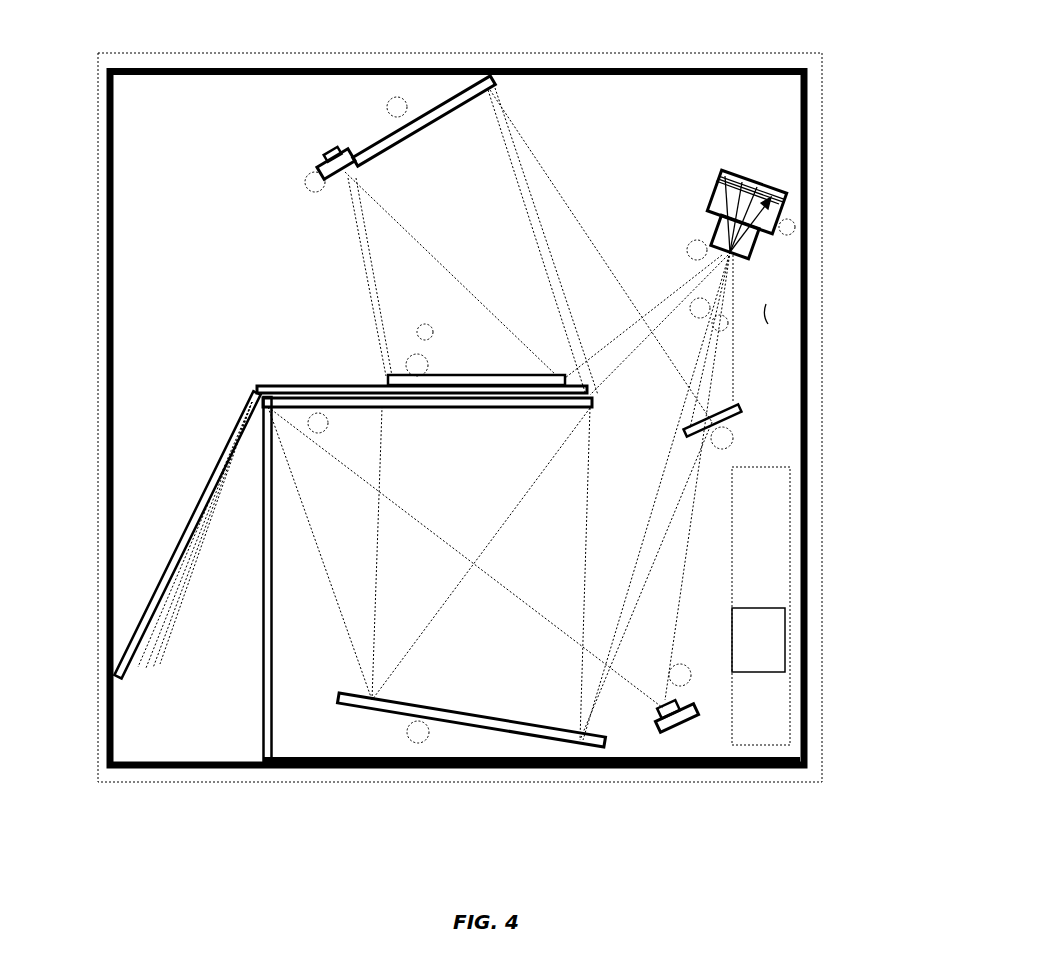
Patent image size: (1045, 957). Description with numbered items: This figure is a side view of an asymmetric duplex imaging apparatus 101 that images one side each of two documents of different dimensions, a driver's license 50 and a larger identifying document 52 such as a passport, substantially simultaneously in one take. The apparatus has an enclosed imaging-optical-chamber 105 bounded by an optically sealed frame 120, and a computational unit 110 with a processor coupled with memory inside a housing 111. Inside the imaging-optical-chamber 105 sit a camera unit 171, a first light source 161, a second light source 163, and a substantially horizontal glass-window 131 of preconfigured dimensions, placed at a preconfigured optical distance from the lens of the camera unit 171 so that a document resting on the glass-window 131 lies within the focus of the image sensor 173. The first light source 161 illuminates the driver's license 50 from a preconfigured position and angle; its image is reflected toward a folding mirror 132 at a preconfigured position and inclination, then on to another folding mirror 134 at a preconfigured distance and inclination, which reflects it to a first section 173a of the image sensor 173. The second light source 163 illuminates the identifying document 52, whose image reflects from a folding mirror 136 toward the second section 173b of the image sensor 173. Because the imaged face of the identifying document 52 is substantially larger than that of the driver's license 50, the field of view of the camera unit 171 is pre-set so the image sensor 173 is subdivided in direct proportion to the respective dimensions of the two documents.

The asymmetric duplex imaging apparatus 101 is at (220, 208).
The optically sealed frame 120 is at (543, 70).
The folding mirror 132 is at (390, 125).
The first light source 161 is at (328, 165).
The image sensor 173 is at (782, 216).
The first section of image sensor 173a is at (748, 186).
The second section of image sensor 173b is at (776, 183).
The camera unit 171 is at (805, 242).
The imaging-optical-chamber 105 is at (768, 315).
The identifying document 52 is at (327, 385).
The driver's license 50 is at (442, 375).
The glass-window 131 is at (388, 408).
The folding mirror 134 is at (735, 430).
The housing 111 is at (786, 608).
The computational unit 110 is at (796, 641).
The folding mirror 136 is at (418, 720).
The second light source 163 is at (690, 725).